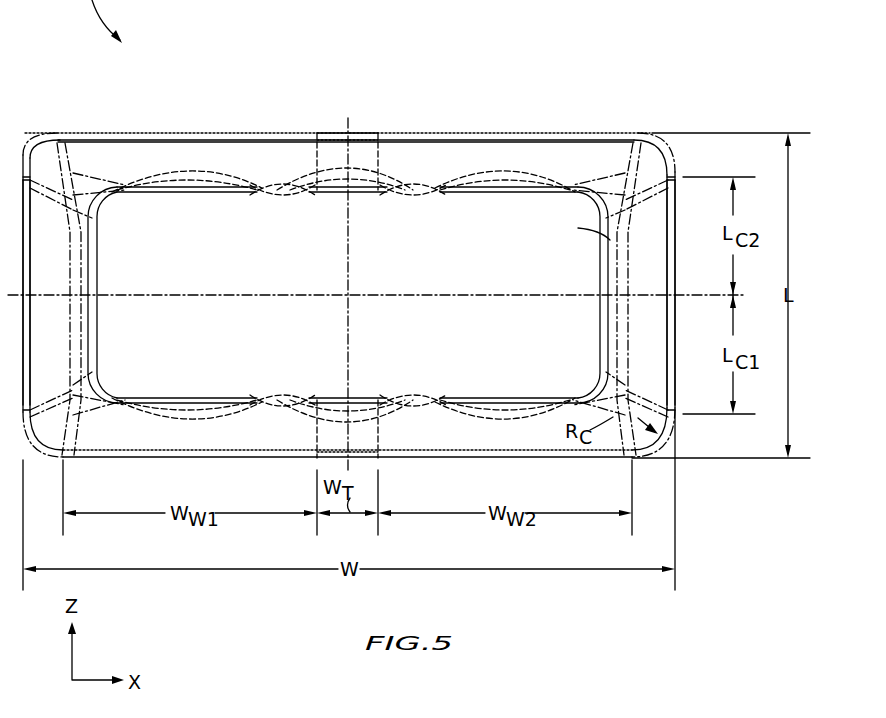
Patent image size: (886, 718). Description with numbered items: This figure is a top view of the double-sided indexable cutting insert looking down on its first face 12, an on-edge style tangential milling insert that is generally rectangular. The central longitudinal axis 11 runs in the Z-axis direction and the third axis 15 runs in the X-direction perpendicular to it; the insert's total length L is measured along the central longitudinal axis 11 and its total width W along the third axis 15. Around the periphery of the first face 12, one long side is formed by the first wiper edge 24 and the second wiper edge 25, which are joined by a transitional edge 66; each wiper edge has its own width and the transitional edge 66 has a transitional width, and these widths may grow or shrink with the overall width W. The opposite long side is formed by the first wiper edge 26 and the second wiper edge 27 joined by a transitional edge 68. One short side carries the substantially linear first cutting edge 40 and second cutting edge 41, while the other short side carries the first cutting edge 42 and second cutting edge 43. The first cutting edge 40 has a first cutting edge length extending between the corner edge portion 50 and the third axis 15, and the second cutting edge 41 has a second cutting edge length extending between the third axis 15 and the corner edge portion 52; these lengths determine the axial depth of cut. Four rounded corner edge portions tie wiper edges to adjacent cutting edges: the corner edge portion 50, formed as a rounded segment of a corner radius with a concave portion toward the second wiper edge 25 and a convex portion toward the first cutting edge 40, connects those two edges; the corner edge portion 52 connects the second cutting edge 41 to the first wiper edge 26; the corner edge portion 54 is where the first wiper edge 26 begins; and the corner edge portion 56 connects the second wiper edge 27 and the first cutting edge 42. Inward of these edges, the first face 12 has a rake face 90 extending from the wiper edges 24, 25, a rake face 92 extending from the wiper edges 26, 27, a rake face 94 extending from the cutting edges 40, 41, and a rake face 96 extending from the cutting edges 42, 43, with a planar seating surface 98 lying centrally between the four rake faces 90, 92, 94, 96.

The central longitudinal axis 11 is at (348, 120).
The first face 12 is at (128, 150).
The third axis 15 is at (678, 302).
The first wiper edge 24 is at (210, 448).
The second wiper edge 25 is at (540, 445).
The first wiper edge 26 is at (556, 140).
The second wiper edge 27 is at (205, 140).
The first cutting edge 40 is at (670, 370).
The second cutting edge 41 is at (667, 233).
The first cutting edge 42 is at (23, 245).
The second cutting edge 43 is at (23, 333).
The corner edge portion 50 is at (643, 450).
The corner edge portion 52 is at (672, 165).
The corner edge portion 54 is at (57, 150).
The corner edge portion 56 is at (52, 440).
The transitional edge 66 is at (365, 447).
The transitional edge 68 is at (365, 147).
The rake face 90 is at (472, 445).
The rake face 92 is at (598, 160).
The rake face 94 is at (645, 258).
The rake face 96 is at (55, 322).
The planar seating surface 98 is at (442, 274).